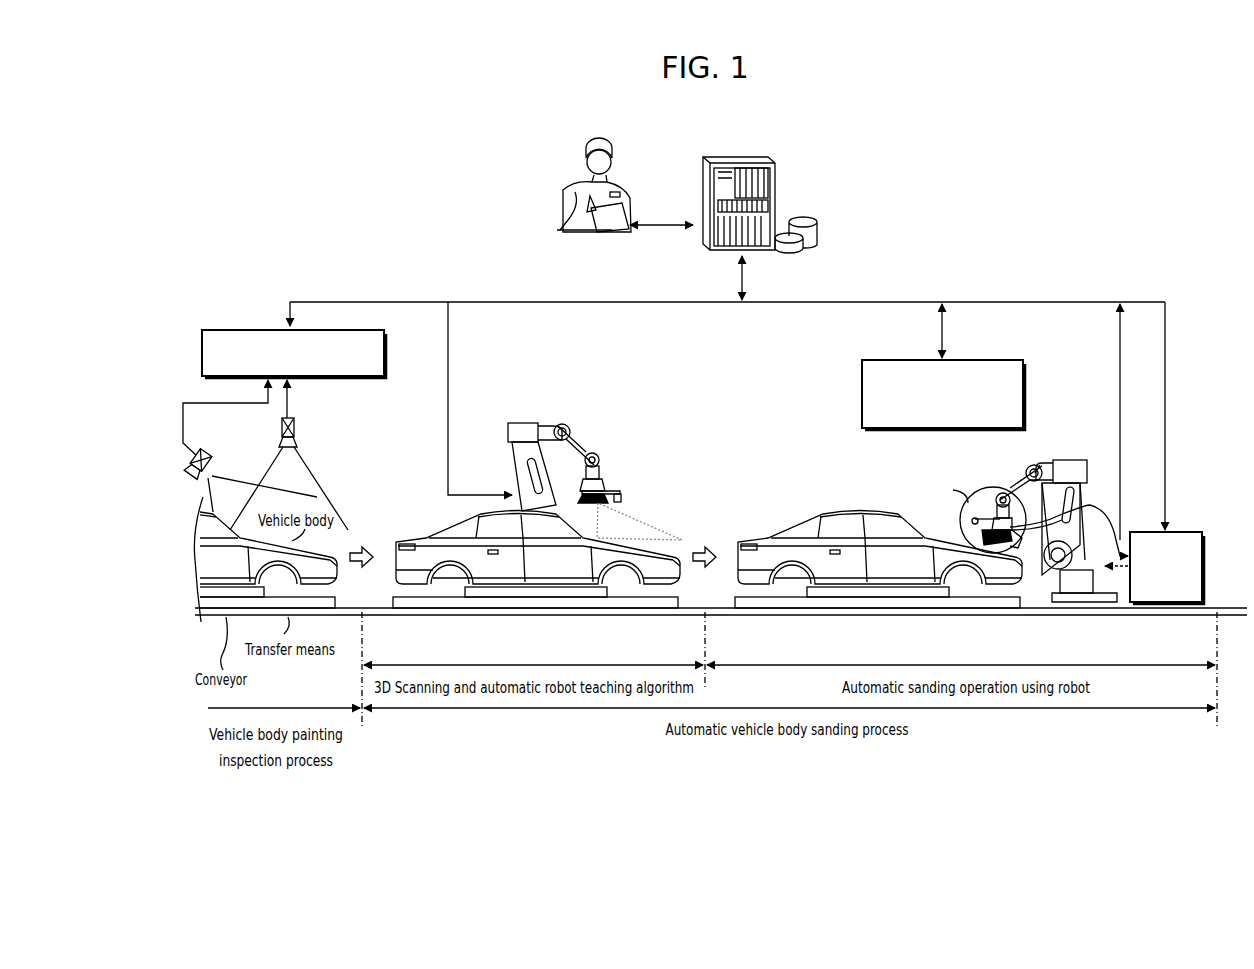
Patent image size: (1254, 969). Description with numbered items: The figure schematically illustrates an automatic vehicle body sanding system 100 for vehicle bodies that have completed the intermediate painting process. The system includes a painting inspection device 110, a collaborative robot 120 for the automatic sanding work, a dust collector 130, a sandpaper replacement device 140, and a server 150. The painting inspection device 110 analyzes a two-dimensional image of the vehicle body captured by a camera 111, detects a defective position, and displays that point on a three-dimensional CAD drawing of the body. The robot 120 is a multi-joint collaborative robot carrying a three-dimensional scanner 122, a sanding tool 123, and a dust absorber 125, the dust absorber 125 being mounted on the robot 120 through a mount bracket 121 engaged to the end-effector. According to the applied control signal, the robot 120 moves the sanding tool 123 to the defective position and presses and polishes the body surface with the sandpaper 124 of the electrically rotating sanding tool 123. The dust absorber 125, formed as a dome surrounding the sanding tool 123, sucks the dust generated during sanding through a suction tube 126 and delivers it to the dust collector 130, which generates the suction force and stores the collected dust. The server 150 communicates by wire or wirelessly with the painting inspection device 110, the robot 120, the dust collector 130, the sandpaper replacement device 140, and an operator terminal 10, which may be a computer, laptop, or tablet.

The automatic vehicle body sanding system 100 is at (896, 204).
The operator terminal 10 is at (607, 242).
The server 150 is at (738, 155).
The painting inspection device 110 is at (250, 328).
The camera 111 is at (209, 455).
The collaborative robot 120 is at (520, 422).
The mount bracket 121 is at (604, 488).
The 3D scanner 122 is at (622, 497).
The sanding tool 123 is at (984, 507).
The sandpaper 124 is at (992, 585).
The dust absorber 125 is at (1015, 560).
The suction tube 126 is at (1042, 526).
The dust collector 130 is at (1204, 567).
The sandpaper replacement device 140 is at (862, 396).